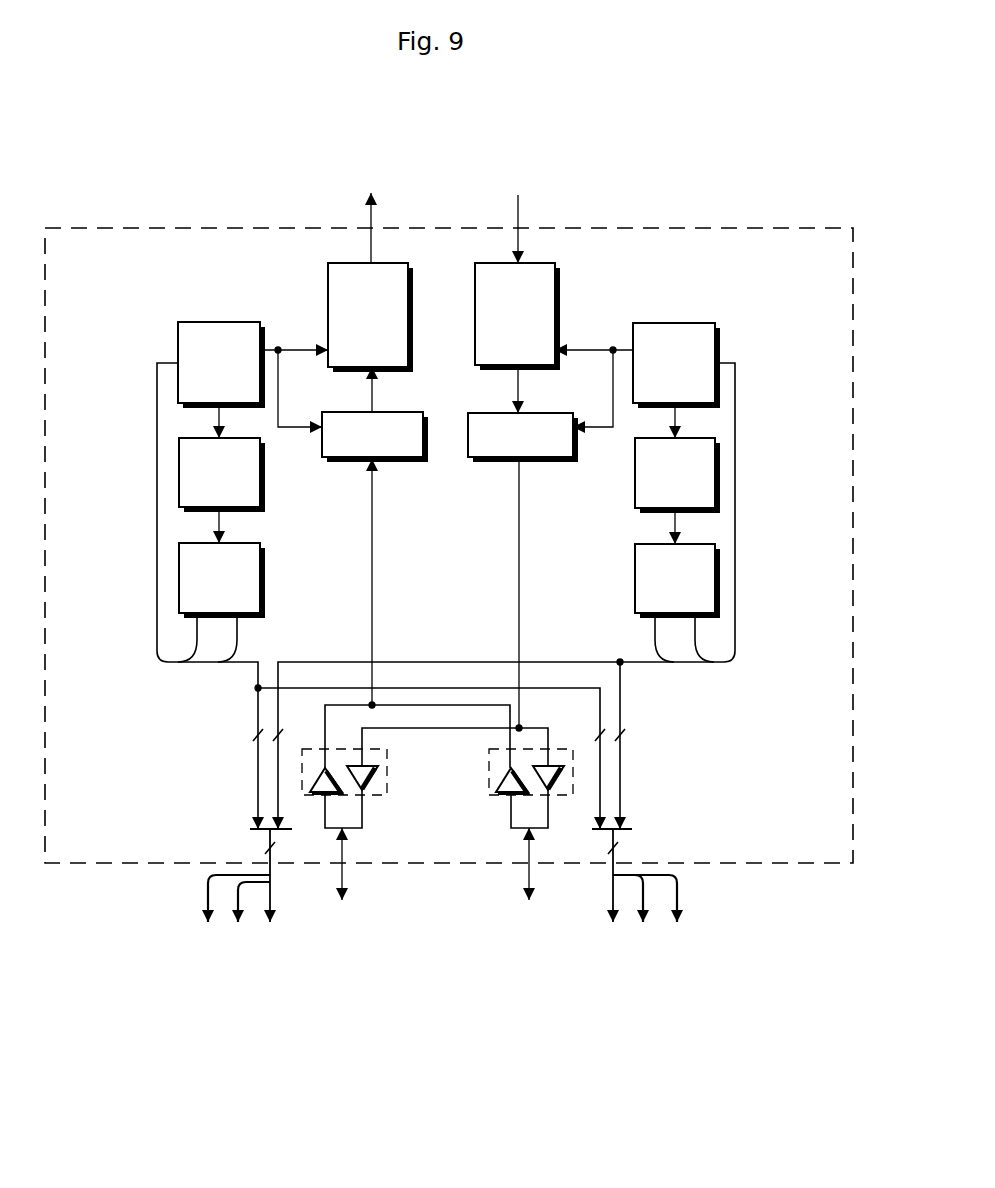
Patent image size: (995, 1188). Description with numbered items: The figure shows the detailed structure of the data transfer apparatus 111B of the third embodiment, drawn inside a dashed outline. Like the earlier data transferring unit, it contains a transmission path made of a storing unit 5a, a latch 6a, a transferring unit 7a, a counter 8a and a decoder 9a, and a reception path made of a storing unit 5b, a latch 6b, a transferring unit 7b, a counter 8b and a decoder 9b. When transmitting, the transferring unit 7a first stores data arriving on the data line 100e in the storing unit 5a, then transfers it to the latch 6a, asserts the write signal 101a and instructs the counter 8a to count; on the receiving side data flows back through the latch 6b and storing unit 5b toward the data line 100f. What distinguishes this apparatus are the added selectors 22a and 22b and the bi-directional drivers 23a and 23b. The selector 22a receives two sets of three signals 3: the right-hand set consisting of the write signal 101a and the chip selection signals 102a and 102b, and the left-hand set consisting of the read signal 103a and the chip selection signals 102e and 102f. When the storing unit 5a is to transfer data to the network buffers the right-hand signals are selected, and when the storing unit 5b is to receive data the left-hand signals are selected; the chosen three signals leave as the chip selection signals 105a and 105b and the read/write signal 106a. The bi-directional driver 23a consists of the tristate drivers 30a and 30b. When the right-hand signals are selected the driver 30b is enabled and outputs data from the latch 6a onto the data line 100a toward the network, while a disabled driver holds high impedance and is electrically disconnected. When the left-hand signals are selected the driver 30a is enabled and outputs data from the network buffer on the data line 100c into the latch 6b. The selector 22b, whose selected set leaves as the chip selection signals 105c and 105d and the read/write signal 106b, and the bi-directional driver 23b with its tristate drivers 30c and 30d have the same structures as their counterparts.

The three-bit bus width 3 is at (440, 796).
The storing unit 5a is at (558, 300).
The storing unit 5b is at (411, 300).
The latch 6a is at (553, 413).
The latch 6b is at (406, 412).
The transferring unit 7a is at (675, 323).
The transferring unit 7b is at (222, 322).
The counter 8a is at (635, 470).
The counter 8b is at (263, 492).
The decoder 9a is at (635, 575).
The decoder 9b is at (263, 574).
The selector 22a is at (632, 832).
The selector 22b is at (250, 832).
The bi-directional driver 23a is at (597, 890).
The bi-directional driver 23b is at (362, 799).
The tristate driver 30a is at (489, 783).
The tristate driver 30b is at (570, 777).
The driver 30c is at (318, 795).
The driver 30d is at (365, 795).
The data line 100a is at (535, 880).
The data line 100c is at (348, 878).
The data line 100e is at (528, 211).
The output signal 100f is at (367, 211).
The write signal 101a is at (736, 612).
The chip selection signal 102a is at (658, 633).
The chip selection signal 102b is at (699, 633).
The chip selection signal 102e is at (155, 657).
The chip selection signal 102f is at (203, 661).
The read signal 103a is at (155, 573).
The chip selection signal 105a is at (615, 885).
The chip selection signal 105b is at (645, 890).
The chip selection signal 105c is at (205, 893).
The chip selection signal 105d is at (235, 905).
The read/write signal 106a is at (680, 893).
The read signal 106b is at (266, 893).
The semiconductor chip 111B is at (633, 228).